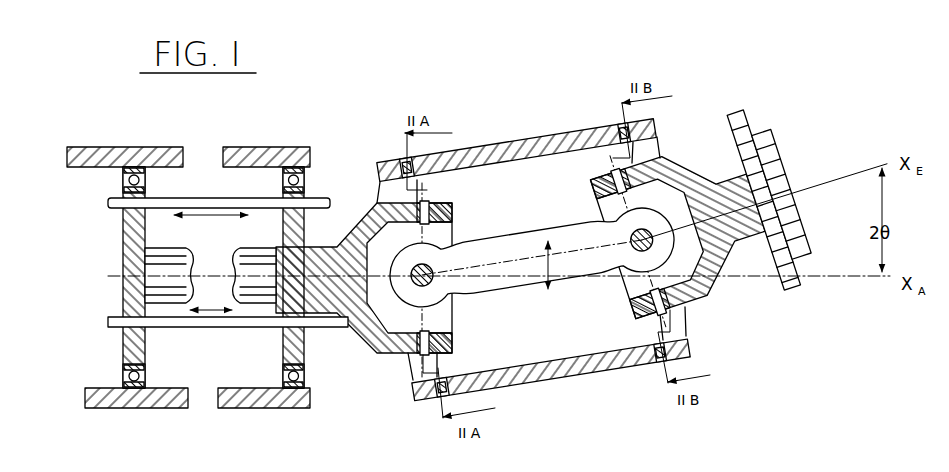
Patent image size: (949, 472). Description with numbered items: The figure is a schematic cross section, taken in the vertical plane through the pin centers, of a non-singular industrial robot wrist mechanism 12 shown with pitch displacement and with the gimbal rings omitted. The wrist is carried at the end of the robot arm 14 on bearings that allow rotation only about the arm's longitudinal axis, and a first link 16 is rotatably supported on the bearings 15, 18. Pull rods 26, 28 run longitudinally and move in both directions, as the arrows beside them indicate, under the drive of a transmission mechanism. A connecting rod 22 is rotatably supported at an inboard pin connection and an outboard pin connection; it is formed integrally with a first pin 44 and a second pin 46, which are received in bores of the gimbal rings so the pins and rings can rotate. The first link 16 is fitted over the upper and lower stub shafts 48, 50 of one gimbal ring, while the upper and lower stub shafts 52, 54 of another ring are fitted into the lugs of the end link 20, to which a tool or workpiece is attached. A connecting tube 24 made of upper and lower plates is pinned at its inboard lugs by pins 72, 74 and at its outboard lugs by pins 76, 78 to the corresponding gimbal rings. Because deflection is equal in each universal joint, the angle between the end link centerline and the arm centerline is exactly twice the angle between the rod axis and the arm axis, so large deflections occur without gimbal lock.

The industrial robot wrist mechanism 12 is at (594, 413).
The robot arm 14 is at (110, 147).
The bearing 15 is at (143, 377).
The first link 16 is at (364, 371).
The bearing 18 is at (283, 377).
The end link 20 is at (743, 288).
The connecting rod 22 is at (508, 283).
The connecting tube 24 is at (502, 145).
The pull rod 26 is at (208, 198).
The pull rod 28 is at (236, 327).
The first pin 44 is at (437, 266).
The second pin 46 is at (623, 230).
The upper stub shaft 48 is at (432, 202).
The lower stub shaft 50 is at (455, 339).
The upper stub shaft 52 is at (615, 173).
The lower stub shaft 54 is at (640, 314).
The pin 72 is at (397, 160).
The pin 74 is at (437, 398).
The pin 76 is at (620, 122).
The pin 78 is at (657, 361).